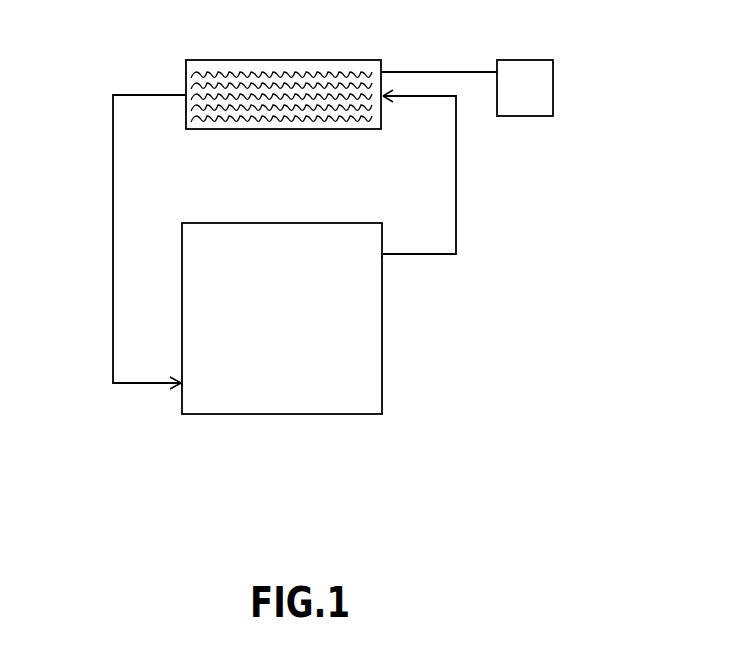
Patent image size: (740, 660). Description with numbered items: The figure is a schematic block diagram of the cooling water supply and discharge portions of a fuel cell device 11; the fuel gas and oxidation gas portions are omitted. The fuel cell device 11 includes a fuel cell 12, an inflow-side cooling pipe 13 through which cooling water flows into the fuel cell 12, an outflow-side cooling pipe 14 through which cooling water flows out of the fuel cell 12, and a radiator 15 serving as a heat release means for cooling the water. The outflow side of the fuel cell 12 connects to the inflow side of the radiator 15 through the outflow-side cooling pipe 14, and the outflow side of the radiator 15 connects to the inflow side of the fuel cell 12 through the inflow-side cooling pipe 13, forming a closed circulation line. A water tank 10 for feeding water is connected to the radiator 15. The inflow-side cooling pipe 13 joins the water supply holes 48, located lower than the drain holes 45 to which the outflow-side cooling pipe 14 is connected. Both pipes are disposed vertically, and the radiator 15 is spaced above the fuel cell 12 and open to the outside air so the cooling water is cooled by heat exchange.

The water tank 10 is at (553, 93).
The fuel cell device 11 is at (303, 519).
The fuel cell 12 is at (293, 414).
The inflow-side cooling pipe 13 is at (113, 252).
The outflow-side cooling pipe 14 is at (456, 196).
The radiator 15 is at (291, 60).
The drain holes 45 is at (383, 258).
The water supply holes 48 is at (181, 386).